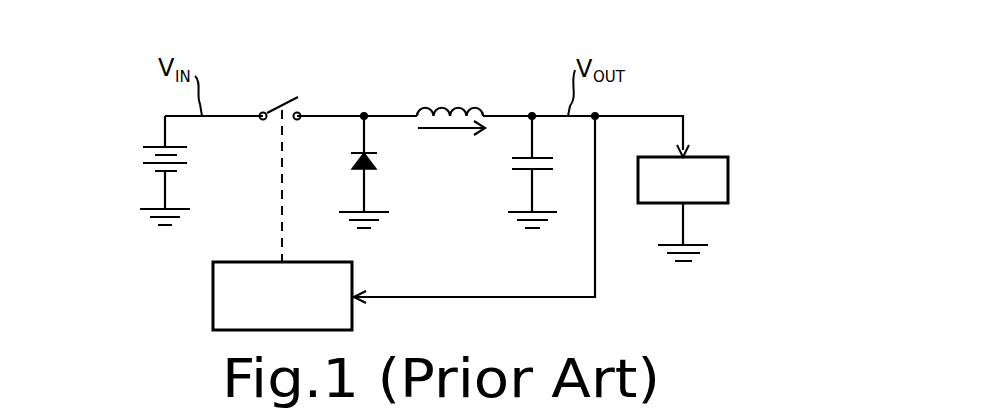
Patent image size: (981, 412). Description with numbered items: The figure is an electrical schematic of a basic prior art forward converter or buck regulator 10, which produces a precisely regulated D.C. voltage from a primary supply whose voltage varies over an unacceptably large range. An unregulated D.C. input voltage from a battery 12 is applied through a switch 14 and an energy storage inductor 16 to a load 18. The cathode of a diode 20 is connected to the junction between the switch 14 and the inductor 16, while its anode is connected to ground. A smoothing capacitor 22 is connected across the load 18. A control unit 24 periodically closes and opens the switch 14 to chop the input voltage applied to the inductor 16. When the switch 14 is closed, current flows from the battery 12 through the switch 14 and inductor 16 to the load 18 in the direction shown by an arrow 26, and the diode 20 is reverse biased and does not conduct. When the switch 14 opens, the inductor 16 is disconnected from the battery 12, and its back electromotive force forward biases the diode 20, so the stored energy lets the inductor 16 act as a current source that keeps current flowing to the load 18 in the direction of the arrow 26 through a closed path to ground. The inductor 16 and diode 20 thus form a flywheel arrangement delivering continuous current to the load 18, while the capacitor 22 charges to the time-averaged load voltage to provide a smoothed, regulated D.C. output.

The buck regulator 10 is at (395, 88).
The battery 12 is at (147, 147).
The switch 14 is at (285, 96).
The energy storage inductor 16 is at (443, 107).
The load 18 is at (728, 181).
The diode 20 is at (353, 162).
The smoothing capacitor 22 is at (515, 173).
The control unit 24 is at (213, 300).
The arrow 26 is at (445, 131).